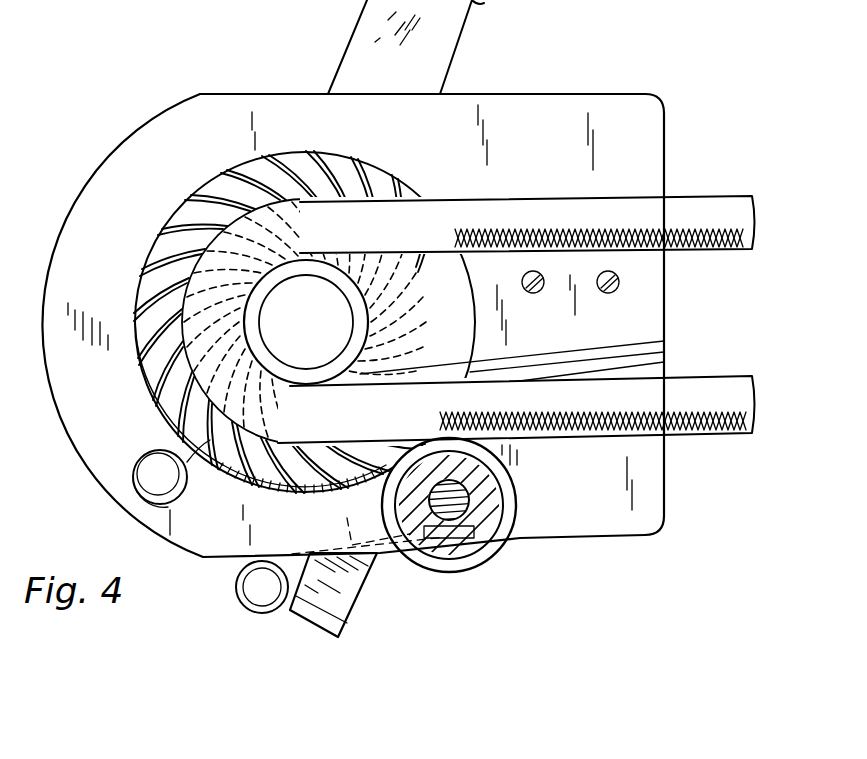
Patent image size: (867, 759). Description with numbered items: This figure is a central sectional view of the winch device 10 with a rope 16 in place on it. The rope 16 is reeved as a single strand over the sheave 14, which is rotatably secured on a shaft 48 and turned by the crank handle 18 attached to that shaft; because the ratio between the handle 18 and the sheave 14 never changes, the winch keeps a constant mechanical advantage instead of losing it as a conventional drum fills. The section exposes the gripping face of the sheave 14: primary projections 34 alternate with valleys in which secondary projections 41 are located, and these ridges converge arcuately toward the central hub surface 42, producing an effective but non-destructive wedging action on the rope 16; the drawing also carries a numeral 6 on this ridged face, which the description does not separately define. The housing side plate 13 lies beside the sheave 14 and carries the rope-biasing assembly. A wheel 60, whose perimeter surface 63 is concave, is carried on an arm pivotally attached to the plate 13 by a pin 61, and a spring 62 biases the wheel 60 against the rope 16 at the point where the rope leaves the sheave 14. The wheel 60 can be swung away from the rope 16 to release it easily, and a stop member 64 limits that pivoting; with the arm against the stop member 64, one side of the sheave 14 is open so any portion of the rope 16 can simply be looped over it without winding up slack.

The winch device 10 is at (640, 54).
The plate 13 is at (645, 132).
The sheave 14 is at (390, 180).
The rope 16 is at (720, 203).
The crank handle 18 is at (423, 48).
The primary projections 34 is at (297, 157).
The fan blades 6 is at (236, 212).
The secondary projections 41 is at (167, 410).
The central hub surface 42 is at (190, 270).
The shaft 48 is at (331, 336).
The wheel 60 is at (479, 555).
The pin 61 is at (160, 482).
The spring 62 is at (332, 508).
The surface 63 is at (520, 491).
The stop member 64 is at (328, 608).